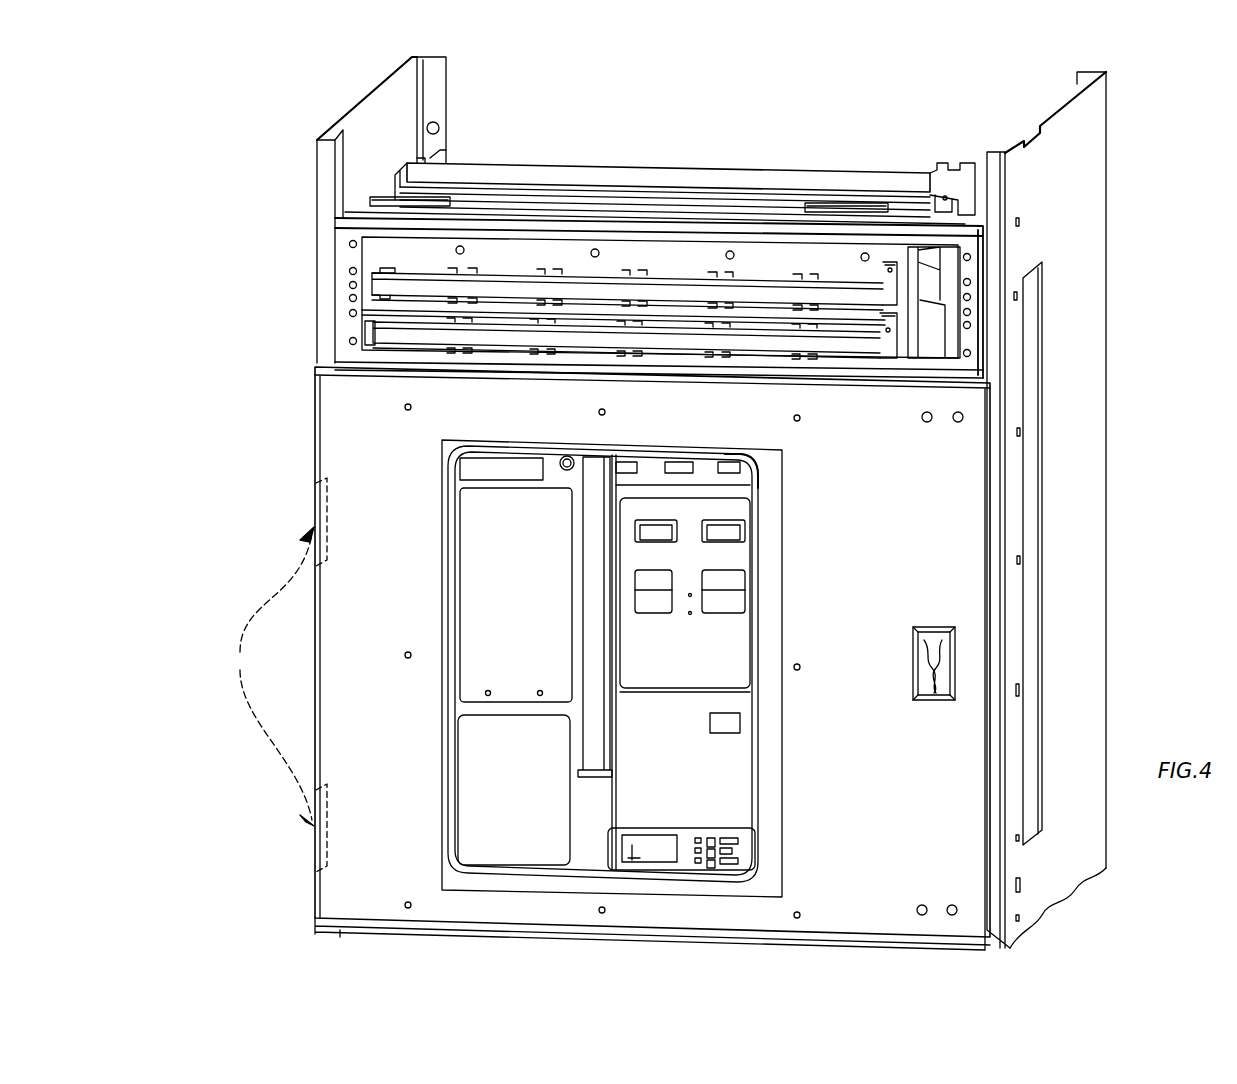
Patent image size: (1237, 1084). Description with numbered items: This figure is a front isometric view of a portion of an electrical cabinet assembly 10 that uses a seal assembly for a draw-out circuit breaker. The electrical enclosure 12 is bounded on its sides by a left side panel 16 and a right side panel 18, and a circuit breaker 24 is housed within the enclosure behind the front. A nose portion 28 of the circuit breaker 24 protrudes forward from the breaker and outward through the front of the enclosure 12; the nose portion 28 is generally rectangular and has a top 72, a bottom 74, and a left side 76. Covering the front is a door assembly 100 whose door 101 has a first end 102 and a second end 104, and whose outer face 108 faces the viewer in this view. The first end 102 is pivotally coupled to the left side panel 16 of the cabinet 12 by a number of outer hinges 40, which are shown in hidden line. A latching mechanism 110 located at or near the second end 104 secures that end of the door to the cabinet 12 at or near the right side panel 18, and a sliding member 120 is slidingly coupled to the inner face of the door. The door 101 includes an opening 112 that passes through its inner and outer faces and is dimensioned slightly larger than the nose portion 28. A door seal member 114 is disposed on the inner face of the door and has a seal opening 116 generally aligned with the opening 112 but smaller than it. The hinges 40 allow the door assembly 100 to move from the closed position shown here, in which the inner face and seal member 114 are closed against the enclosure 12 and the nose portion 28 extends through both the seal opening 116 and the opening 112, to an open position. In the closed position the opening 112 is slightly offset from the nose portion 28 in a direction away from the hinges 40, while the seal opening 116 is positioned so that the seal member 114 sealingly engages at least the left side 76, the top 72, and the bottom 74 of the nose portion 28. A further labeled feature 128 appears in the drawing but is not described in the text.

The electrical cabinet assembly 10 is at (1118, 158).
The electrical enclosure 12 is at (1085, 70).
The left side panel 16 is at (352, 110).
The right side panel 18 is at (1085, 298).
The circuit breaker 24 is at (680, 772).
The nose portion 28 is at (743, 877).
The outer hinges 40 is at (270, 675).
The top 72 is at (595, 440).
The bottom 74 is at (598, 868).
The left side 76 is at (447, 582).
The door assembly 100 is at (271, 474).
The door 101 is at (945, 766).
The first end 102 is at (310, 411).
The second end 104 is at (995, 553).
The outer face 108 is at (943, 858).
The latching mechanism 110 is at (910, 637).
The opening 112 is at (783, 527).
The door seal member 114 is at (465, 878).
The seal opening 116 is at (758, 822).
The sliding member 120 is at (770, 643).
The corner 128 is at (735, 453).